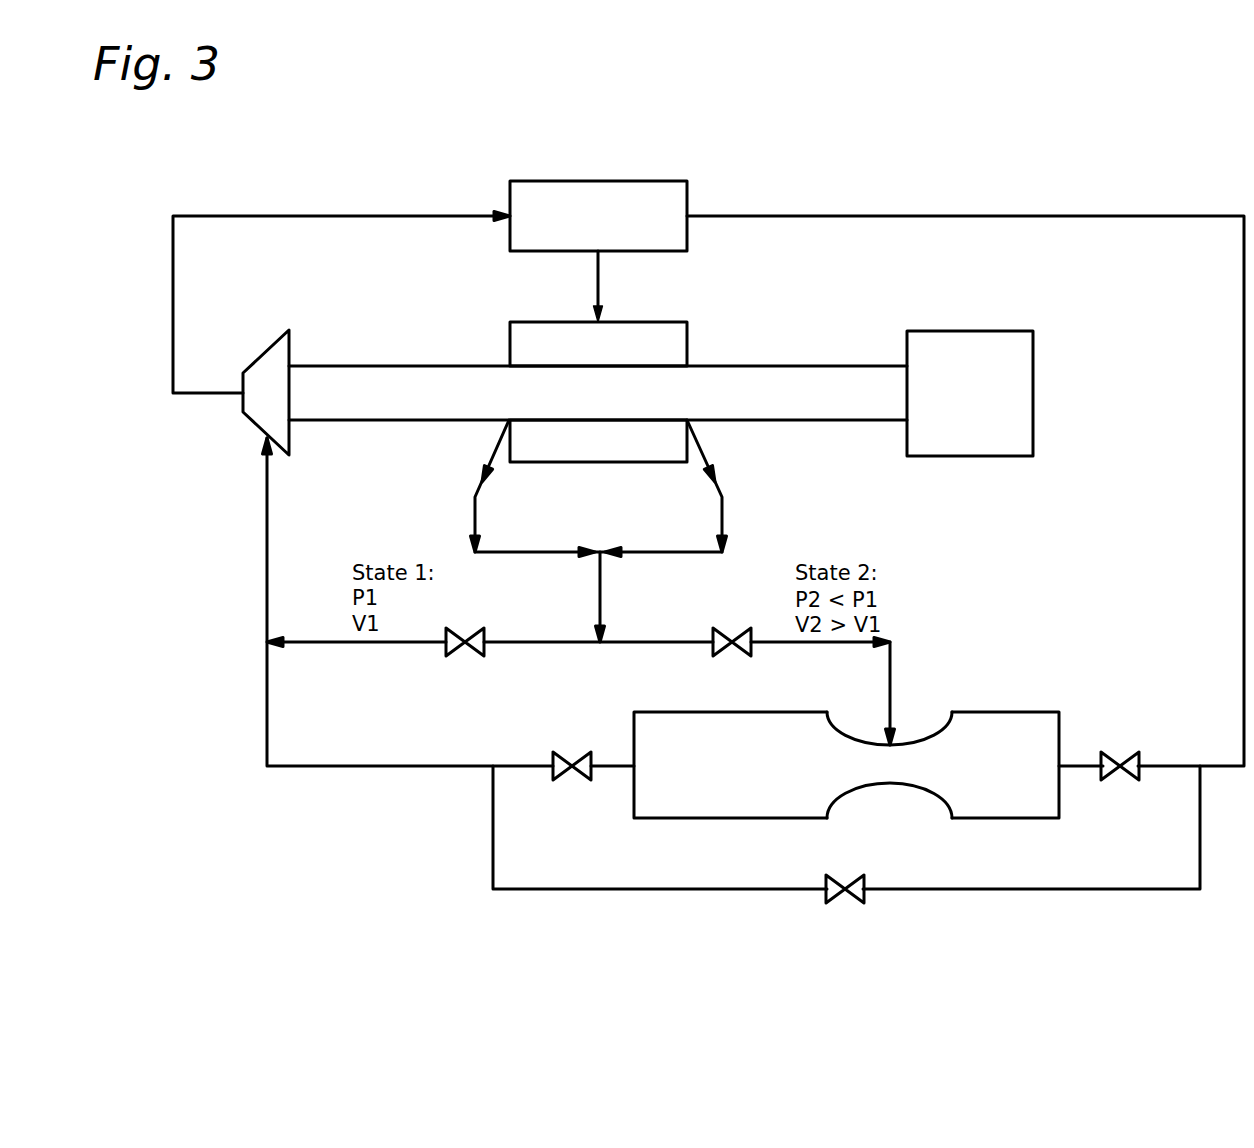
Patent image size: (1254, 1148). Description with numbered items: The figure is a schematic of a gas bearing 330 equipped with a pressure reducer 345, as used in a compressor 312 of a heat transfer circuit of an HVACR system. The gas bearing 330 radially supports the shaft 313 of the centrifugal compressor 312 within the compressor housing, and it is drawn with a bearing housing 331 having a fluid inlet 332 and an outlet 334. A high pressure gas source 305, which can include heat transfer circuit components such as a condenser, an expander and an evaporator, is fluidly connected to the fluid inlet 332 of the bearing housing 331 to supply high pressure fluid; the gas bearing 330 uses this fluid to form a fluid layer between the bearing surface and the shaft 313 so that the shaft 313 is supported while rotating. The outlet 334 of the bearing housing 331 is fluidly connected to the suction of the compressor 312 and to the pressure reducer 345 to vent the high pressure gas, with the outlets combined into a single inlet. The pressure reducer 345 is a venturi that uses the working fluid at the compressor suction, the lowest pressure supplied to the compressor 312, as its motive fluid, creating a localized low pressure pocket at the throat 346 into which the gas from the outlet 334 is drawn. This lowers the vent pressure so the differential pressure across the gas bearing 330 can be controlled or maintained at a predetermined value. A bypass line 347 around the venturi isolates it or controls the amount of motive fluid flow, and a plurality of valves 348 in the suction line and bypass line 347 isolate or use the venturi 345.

The high pressure gas source 305 is at (557, 178).
The compressor 312 is at (1018, 290).
The shaft 313 is at (423, 365).
The gas bearing 330 is at (672, 320).
The bearing housing 331 is at (647, 465).
The fluid inlet 332 is at (597, 320).
The outlet 334 is at (505, 423).
The pressure reducer 345 is at (851, 763).
The throat 346 is at (890, 783).
The bypass line 347 is at (638, 893).
The valves 348 is at (592, 778).